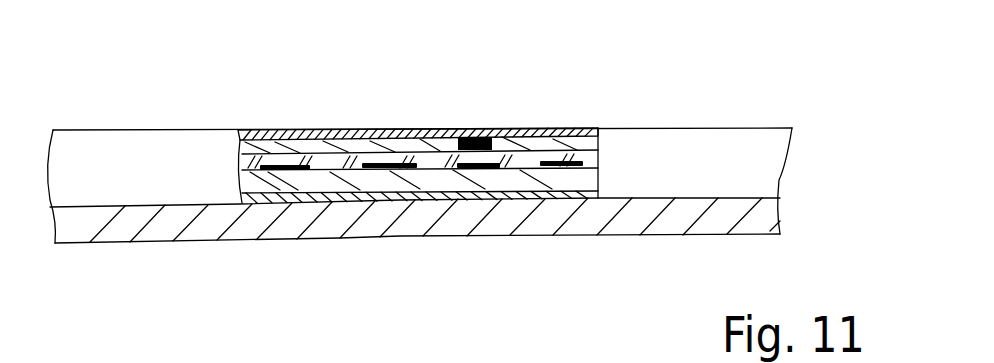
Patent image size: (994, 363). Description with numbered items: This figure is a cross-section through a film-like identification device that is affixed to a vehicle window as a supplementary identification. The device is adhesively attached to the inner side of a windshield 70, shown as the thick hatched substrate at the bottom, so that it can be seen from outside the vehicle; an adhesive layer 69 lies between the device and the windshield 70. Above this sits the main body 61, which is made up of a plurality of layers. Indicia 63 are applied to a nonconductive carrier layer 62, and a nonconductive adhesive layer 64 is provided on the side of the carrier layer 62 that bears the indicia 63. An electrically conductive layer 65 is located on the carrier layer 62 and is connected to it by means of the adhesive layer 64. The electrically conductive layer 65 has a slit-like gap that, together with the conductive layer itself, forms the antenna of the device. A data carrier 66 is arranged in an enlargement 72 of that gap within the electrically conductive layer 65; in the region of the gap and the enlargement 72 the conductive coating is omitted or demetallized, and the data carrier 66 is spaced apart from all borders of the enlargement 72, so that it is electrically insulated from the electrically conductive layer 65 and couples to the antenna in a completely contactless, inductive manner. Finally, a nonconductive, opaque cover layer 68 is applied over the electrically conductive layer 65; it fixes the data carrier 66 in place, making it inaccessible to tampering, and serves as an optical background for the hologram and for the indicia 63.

The main body 61 is at (710, 153).
The carrier layer 62 is at (602, 175).
The indicia 63 is at (500, 148).
The adhesive layer 64 is at (600, 150).
The electrically conductive layer 65 is at (552, 158).
The data carrier 66 is at (460, 162).
The cover layer 68 is at (297, 128).
The adhesive layer 69 is at (507, 197).
The windshield 70 is at (378, 220).
The enlargement 72 is at (459, 137).